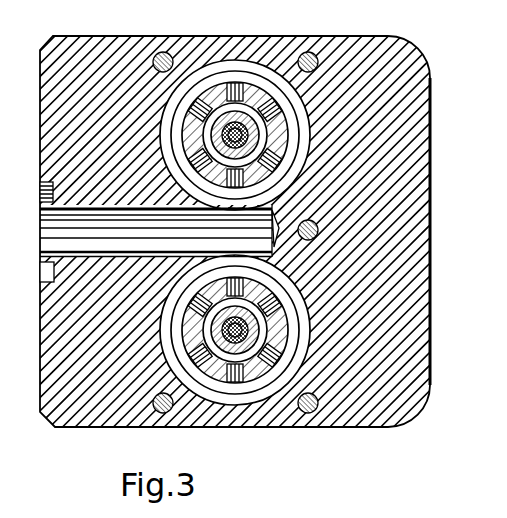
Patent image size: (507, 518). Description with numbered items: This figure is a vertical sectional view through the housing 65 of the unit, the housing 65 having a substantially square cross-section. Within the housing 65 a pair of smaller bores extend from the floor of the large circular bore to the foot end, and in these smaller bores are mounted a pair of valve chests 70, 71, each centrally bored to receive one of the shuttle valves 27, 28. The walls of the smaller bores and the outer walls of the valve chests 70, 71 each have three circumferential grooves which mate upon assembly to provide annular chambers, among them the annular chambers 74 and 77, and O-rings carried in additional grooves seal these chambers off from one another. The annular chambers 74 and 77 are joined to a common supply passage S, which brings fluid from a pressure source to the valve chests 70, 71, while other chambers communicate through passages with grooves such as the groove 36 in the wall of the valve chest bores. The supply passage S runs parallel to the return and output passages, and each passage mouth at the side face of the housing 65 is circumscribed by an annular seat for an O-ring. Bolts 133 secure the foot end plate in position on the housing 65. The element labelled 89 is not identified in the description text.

The housing 65 is at (410, 207).
The bolts 133 is at (316, 53).
The supply passage S is at (58, 235).
The annular chamber 74 is at (240, 71).
The valve chest 70 is at (257, 90).
The shuttle valve 27 is at (257, 136).
The bearing seat 89 is at (238, 187).
The annular chamber 77 is at (50, 271).
The valve chest 71 is at (256, 383).
The groove 36 is at (257, 352).
The shuttle valve 28 is at (257, 331).